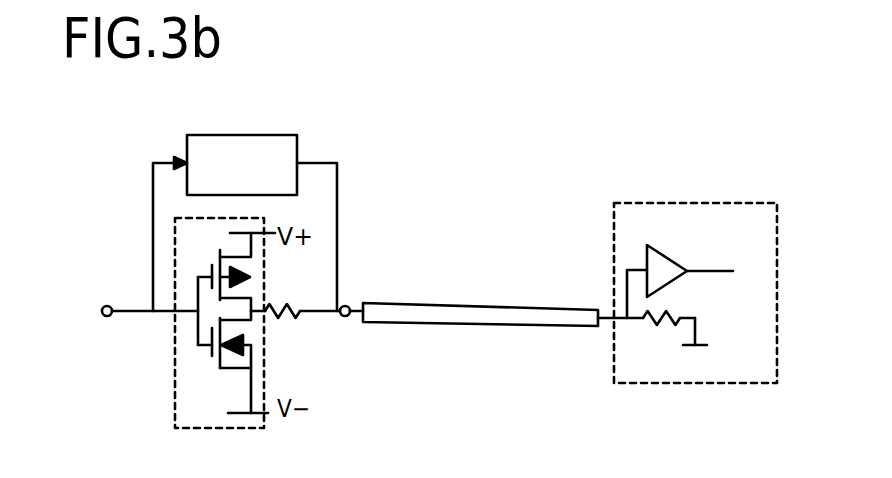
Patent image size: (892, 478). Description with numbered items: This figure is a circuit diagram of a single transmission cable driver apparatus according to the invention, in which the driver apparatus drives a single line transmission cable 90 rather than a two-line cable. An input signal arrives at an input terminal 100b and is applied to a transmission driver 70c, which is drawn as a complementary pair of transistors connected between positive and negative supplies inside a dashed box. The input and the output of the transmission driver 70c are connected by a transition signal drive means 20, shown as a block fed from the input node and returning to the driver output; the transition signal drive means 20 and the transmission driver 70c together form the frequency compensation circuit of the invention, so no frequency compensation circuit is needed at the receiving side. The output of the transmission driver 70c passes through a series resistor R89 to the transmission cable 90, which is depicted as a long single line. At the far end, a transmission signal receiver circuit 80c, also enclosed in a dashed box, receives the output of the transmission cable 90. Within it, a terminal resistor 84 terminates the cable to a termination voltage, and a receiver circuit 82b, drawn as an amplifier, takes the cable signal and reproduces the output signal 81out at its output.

The transition signal drive means 20 is at (242, 165).
The input terminal 100b is at (97, 293).
The transmission driver 70c is at (198, 428).
The series source resistor R89 is at (296, 326).
The transmission cable 90 is at (441, 304).
The transmission signal receiver circuit 80c is at (695, 311).
The receiver circuit 82b is at (671, 240).
The output signal 81out is at (733, 262).
The terminal resistor 84 is at (655, 330).